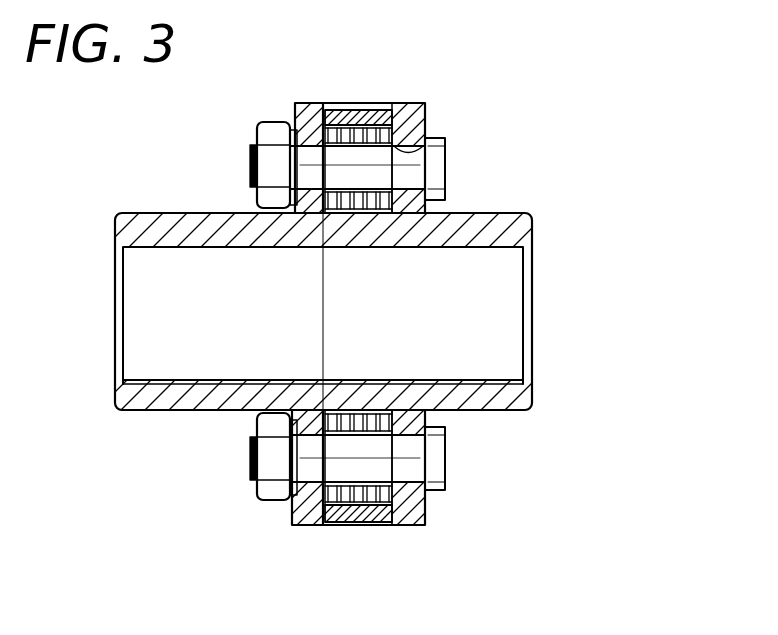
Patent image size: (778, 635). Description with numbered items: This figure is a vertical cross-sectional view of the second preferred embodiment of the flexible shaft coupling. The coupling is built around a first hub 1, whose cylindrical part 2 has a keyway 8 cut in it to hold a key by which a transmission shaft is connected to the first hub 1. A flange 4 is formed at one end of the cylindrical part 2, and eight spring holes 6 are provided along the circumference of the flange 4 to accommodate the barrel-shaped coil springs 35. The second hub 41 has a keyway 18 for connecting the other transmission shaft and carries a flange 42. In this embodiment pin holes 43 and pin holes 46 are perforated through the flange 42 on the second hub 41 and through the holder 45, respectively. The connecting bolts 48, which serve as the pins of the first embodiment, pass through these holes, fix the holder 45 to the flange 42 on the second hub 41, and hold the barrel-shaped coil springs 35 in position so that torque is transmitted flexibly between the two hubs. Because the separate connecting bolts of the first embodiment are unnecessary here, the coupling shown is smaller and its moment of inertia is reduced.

The first hub 1 is at (516, 211).
The cylindrical part 2 is at (534, 232).
The flange 4 is at (366, 524).
The spring holes 6 is at (312, 500).
The keyway 8 is at (505, 378).
The keyway 18 is at (150, 378).
The barrel-shaped coil springs 35 is at (350, 108).
The second hub 41 is at (180, 206).
The flange 42 is at (305, 105).
The pin holes 43 is at (280, 150).
The holder 45 is at (414, 99).
The pin holes 46 is at (447, 139).
The connecting bolts 48 is at (446, 168).